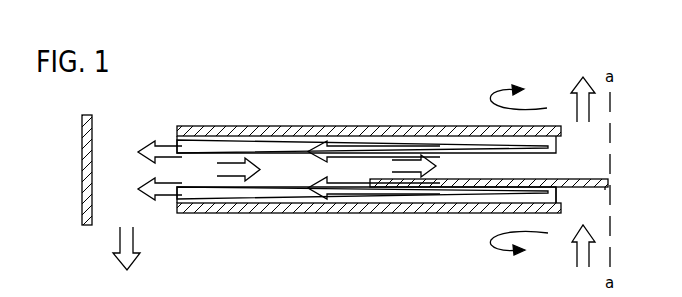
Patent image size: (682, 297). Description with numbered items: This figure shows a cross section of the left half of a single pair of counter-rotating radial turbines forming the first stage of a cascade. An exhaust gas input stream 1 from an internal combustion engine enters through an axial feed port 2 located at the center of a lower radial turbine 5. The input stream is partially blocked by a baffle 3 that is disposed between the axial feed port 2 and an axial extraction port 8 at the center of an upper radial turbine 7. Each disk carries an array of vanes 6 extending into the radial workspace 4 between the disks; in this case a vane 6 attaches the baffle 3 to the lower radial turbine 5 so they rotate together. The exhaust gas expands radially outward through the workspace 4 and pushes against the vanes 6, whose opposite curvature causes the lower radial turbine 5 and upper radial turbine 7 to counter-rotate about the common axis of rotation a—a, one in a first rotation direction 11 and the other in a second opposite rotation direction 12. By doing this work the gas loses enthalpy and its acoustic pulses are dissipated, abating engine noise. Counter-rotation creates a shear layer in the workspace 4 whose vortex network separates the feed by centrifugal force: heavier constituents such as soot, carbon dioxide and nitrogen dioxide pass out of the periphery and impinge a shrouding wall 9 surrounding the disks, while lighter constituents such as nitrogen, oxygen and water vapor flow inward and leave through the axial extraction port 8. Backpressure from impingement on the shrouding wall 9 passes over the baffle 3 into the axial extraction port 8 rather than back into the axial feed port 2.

The exhaust gas input stream 1 is at (577, 253).
The axial feed port 2 is at (580, 199).
The baffle 3 is at (588, 178).
The workspace 4 is at (378, 170).
The lower radial turbine 5 is at (326, 214).
The vane 6 is at (217, 141).
The upper radial turbine 7 is at (328, 127).
The axial extraction port 8 is at (583, 115).
The shrouding wall 9 is at (82, 186).
The first rotation direction 11 is at (505, 243).
The second opposite rotation direction 12 is at (504, 97).